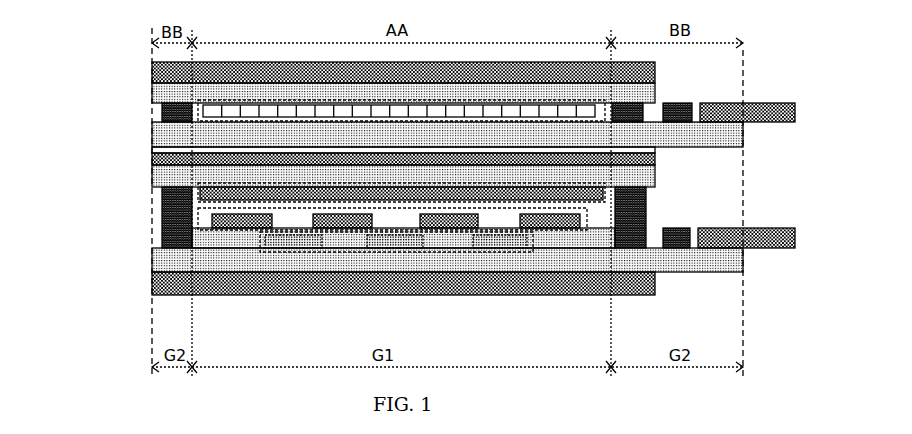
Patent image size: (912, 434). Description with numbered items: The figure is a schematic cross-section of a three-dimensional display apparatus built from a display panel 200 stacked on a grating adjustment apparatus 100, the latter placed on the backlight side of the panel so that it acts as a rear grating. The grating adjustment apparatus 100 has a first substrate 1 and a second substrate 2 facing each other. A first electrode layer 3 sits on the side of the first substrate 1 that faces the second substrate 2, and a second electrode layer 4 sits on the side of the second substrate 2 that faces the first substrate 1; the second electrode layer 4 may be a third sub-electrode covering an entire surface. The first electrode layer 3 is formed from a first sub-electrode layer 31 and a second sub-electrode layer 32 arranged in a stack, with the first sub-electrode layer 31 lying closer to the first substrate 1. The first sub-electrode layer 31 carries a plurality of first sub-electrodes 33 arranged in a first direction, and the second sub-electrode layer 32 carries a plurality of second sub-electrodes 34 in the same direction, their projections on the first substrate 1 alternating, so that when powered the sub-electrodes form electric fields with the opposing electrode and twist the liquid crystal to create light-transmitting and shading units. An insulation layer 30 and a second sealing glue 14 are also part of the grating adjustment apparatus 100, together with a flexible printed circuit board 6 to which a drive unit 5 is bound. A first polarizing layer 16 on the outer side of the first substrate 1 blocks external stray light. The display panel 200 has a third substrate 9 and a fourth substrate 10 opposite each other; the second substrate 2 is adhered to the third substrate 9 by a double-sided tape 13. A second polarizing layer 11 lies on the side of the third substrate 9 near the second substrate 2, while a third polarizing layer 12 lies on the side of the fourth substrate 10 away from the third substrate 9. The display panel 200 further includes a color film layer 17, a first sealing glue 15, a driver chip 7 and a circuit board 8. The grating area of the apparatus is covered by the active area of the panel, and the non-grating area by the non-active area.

The first substrate 1 is at (165, 261).
The second substrate 2 is at (165, 178).
The first electrode layer 3 is at (404, 287).
The second electrode layer 4 is at (605, 192).
The drive unit 5 is at (680, 249).
The flexible printed circuit board 6 is at (750, 249).
The driver chip 7 is at (680, 103).
The circuit board 8 is at (750, 103).
The third substrate 9 is at (153, 137).
The fourth substrate 10 is at (153, 97).
The second polarizing layer 11 is at (153, 152).
The third polarizing layer 12 is at (153, 73).
The double-sided tape 13 is at (153, 161).
The second sealing glue 14 is at (165, 221).
The first sealing glue 15 is at (160, 113).
The first polarizing layer 16 is at (165, 283).
The color film layer 17 is at (278, 101).
The insulation layer 30 is at (210, 238).
The first sub-electrode layer 31 is at (414, 287).
The second sub-electrode layer 32 is at (404, 275).
The first sub-electrodes 33 is at (293, 244).
The second sub-electrodes 34 is at (245, 223).
The grating adjustment apparatus 100 is at (78, 218).
The display panel 200 is at (78, 53).